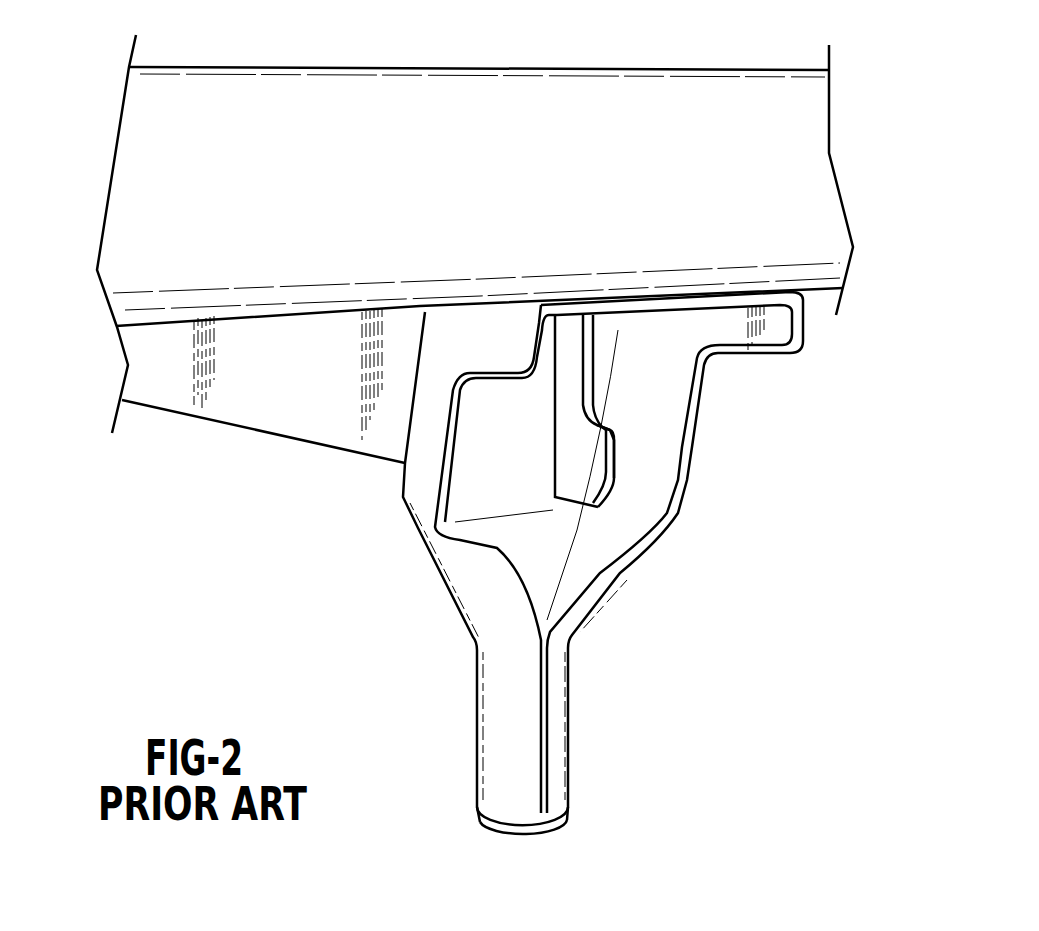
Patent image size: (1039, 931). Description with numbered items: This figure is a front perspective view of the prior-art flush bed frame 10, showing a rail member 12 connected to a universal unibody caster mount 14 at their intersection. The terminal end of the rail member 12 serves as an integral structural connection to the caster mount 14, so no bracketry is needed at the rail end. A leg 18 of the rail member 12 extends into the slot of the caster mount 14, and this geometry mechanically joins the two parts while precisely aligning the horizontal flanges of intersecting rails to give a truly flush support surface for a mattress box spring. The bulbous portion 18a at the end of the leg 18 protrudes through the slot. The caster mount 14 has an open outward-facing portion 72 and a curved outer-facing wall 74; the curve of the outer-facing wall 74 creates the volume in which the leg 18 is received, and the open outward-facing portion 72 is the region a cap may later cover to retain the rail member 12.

The flush bed frame 10 is at (945, 188).
The rail member 12 is at (248, 412).
The universal unibody caster mount 14 is at (643, 492).
The leg 18 is at (573, 372).
The bulbous portion 18a is at (610, 465).
The open outward-facing portion 72 is at (507, 530).
The outer-facing wall 74 is at (507, 462).